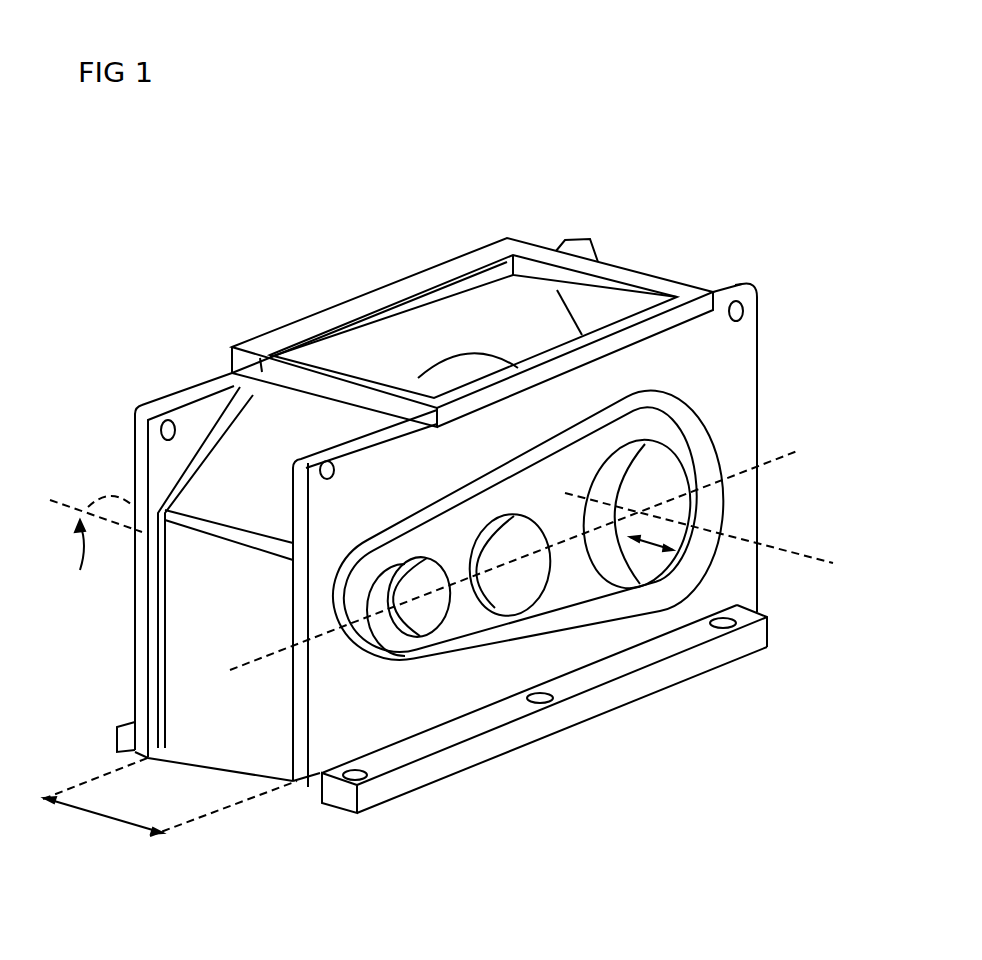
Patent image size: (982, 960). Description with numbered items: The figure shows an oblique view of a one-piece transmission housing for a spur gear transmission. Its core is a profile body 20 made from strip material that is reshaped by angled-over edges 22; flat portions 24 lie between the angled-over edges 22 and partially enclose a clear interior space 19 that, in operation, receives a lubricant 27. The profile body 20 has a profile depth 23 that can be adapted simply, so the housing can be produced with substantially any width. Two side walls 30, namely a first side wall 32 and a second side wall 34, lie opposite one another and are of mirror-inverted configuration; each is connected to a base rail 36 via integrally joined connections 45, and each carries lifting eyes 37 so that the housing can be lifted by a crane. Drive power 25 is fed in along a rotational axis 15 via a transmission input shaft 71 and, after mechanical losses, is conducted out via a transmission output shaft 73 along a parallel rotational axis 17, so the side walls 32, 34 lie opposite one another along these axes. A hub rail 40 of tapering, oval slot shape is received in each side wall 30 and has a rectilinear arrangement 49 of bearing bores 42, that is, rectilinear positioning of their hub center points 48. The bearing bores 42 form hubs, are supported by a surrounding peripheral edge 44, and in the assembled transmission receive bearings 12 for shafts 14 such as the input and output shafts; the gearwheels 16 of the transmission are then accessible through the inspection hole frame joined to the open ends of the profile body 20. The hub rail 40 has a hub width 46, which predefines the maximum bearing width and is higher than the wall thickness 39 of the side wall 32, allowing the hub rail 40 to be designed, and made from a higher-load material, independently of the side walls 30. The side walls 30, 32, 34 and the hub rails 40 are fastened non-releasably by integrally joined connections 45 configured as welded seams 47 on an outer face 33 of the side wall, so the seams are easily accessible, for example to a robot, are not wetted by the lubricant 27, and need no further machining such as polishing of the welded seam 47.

The bearings 12 is at (543, 568).
The shafts 14 is at (439, 550).
The rotational axis 15 is at (89, 479).
The gearwheels 16 is at (401, 300).
The rotational axis 17 is at (704, 583).
The clear interior space 19 is at (491, 296).
The profile body 20 is at (151, 561).
The angled-over edges 22 is at (213, 659).
The profile depth 23 is at (107, 817).
The flat portions 24 is at (227, 443).
The drive power 25 is at (83, 563).
The lubricant 27 is at (230, 533).
The side walls 30 is at (488, 495).
The first side wall 32 is at (488, 495).
The outer face 33 is at (488, 495).
The second side wall 34 is at (488, 495).
The base rail 36 is at (513, 740).
The lifting eyes 37 is at (737, 301).
The wall thickness 39 is at (727, 285).
The hub rail 40 is at (453, 377).
The bearing bores 42 is at (543, 568).
The peripheral edge 44 is at (528, 470).
The integrally joined connection 45 is at (386, 518).
The hub width 46 is at (640, 548).
The welded seam 47 is at (260, 370).
The hub center points 48 is at (637, 513).
The rectilinear arrangement 49 is at (788, 454).
The transmission input shaft 71 is at (60, 492).
The transmission output shaft 73 is at (824, 564).